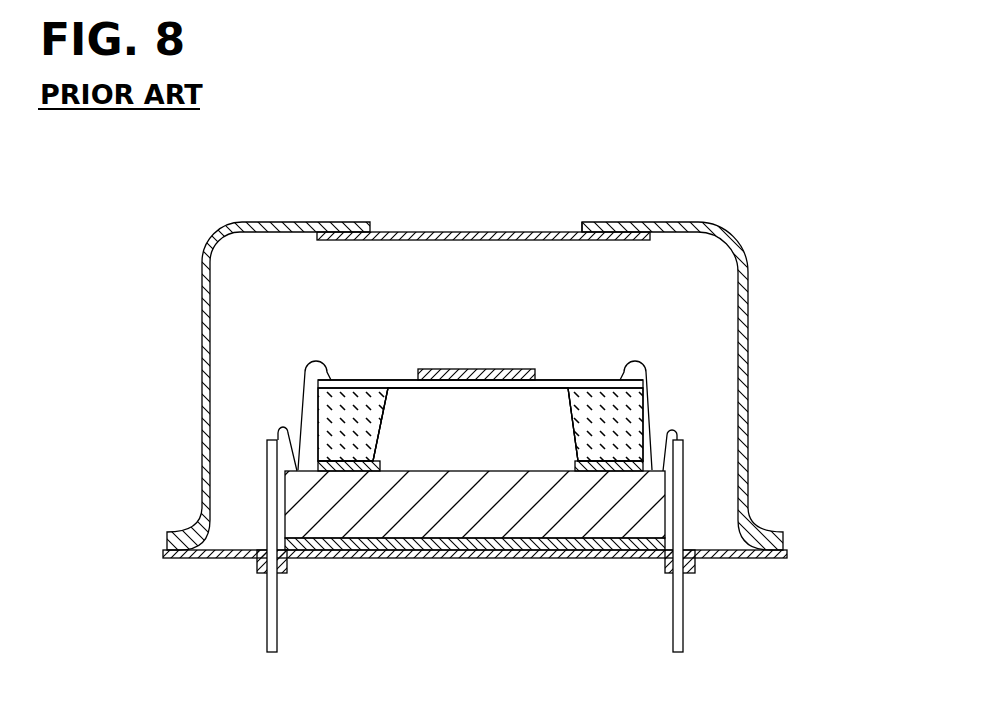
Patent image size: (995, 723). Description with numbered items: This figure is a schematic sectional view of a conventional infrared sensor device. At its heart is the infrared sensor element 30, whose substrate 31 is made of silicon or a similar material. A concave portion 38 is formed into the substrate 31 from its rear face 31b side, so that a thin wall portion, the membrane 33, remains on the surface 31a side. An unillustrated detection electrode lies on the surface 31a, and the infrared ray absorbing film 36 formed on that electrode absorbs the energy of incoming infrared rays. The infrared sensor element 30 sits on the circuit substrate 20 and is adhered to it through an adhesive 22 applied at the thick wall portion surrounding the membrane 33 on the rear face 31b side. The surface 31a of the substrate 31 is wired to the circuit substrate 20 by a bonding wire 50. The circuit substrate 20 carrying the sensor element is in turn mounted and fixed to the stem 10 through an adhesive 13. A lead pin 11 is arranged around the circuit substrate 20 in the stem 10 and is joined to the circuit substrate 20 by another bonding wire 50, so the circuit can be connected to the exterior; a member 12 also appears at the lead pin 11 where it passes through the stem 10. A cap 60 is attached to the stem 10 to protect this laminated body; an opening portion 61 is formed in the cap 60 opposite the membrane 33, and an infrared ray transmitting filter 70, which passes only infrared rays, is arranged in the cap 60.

The stem 10 is at (777, 558).
The lead pin 11 is at (267, 640).
The insulating sealing member 12 is at (257, 567).
The adhesive 13 is at (460, 548).
The circuit substrate 20 is at (548, 528).
The adhesive 22 is at (613, 468).
The infrared sensor element 30 is at (554, 425).
The substrate 31 is at (480, 420).
The surface 31a is at (352, 378).
The rear face 31b is at (318, 466).
The membrane 33 is at (407, 378).
The infrared ray absorbing film 36 is at (480, 366).
The concave portion 38 is at (382, 392).
The bonding wire 50 is at (302, 374).
The cap 60 is at (724, 243).
The opening portion 61 is at (580, 224).
The infrared ray transmitting filter 70 is at (446, 231).